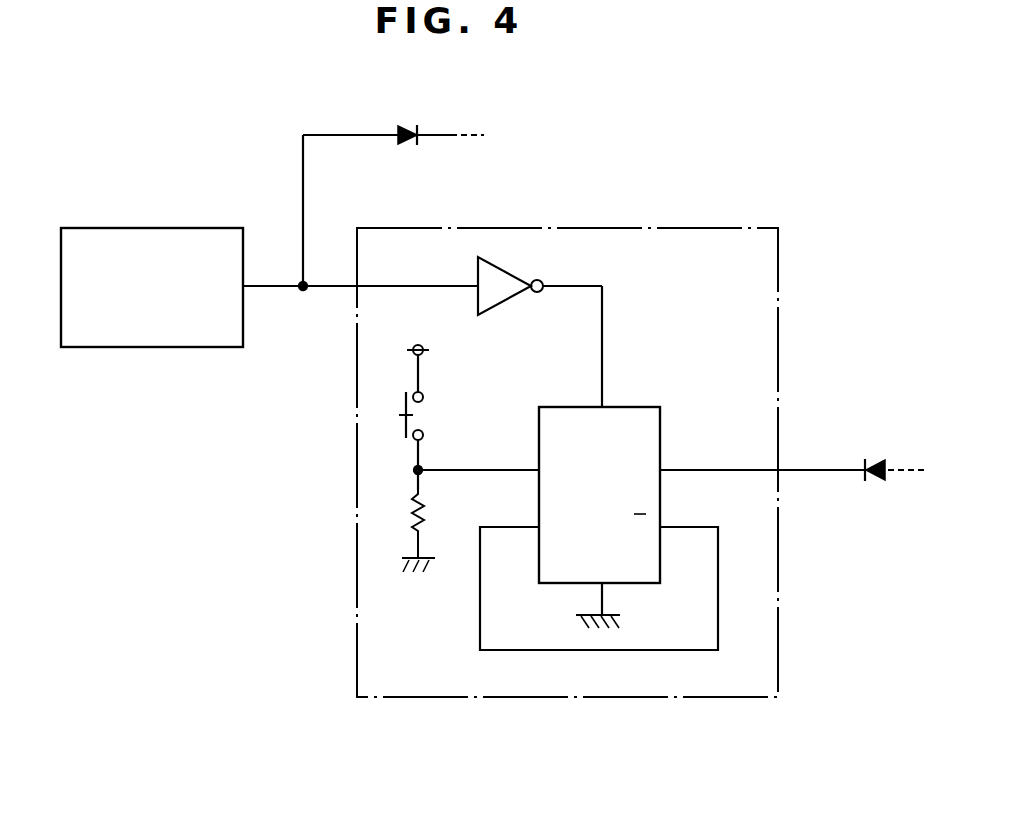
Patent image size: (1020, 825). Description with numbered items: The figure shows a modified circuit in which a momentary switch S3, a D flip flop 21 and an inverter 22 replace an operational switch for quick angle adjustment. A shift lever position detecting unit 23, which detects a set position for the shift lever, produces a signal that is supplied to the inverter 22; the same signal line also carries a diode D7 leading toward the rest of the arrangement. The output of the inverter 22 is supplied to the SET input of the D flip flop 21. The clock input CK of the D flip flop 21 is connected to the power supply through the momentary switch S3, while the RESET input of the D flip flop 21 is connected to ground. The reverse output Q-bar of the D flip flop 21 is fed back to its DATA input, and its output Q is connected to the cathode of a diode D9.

The shift lever position detecting unit 23 is at (174, 227).
The inverter 22 is at (502, 266).
The D flip flop 21 is at (636, 406).
The diode D7 is at (441, 118).
The diode D9 is at (896, 451).
The momentary switch S3 is at (414, 414).